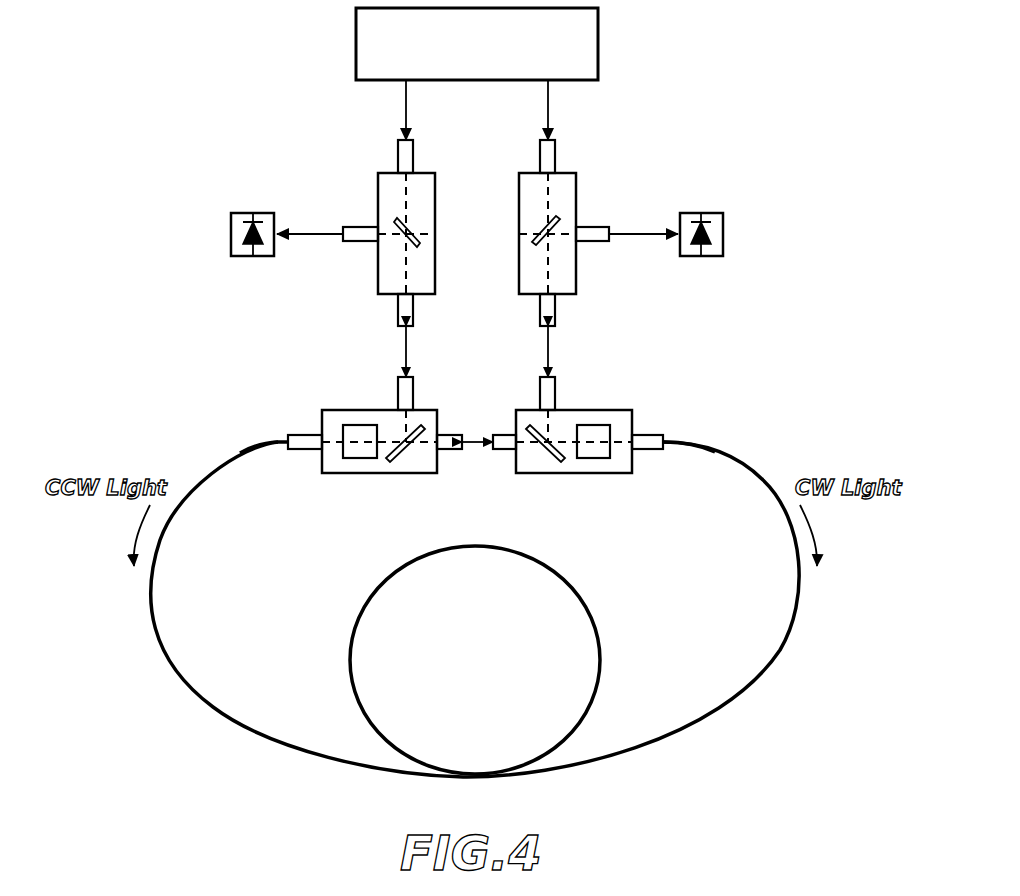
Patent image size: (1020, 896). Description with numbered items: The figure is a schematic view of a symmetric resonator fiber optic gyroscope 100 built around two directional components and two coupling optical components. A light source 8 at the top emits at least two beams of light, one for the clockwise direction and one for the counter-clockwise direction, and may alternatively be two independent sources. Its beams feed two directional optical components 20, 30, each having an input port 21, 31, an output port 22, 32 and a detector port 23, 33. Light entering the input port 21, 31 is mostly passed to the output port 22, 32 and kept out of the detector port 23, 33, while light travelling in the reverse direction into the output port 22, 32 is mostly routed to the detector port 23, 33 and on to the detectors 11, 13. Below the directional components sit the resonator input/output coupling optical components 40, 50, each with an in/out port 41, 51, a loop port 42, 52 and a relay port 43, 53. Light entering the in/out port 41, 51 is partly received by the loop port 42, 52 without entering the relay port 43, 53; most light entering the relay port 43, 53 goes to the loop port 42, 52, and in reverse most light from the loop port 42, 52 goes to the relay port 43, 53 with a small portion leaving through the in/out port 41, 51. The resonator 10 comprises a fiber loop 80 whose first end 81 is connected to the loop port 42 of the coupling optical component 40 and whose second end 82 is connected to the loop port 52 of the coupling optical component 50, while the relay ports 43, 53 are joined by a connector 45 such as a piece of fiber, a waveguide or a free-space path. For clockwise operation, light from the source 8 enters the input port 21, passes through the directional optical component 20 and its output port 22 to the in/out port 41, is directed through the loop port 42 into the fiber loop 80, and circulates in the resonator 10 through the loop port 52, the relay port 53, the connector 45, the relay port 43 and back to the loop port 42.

The light source 8 is at (598, 30).
The resonator fiber optic gyroscope 100 is at (740, 146).
The resonator 10 is at (670, 778).
The detector 11 is at (723, 228).
The detector 13 is at (231, 228).
The directional optical component 20 is at (576, 190).
The input port 21 is at (555, 158).
The output port 22 is at (555, 310).
The detector port 23 is at (592, 227).
The directional optical component 30 is at (378, 190).
The input port 31 is at (398, 158).
The output port 32 is at (398, 310).
The detector port 33 is at (360, 227).
The coupling optical component 40 is at (572, 473).
The in/out port 41 is at (555, 394).
The loop port 42 is at (650, 449).
The relay port 43 is at (506, 449).
The connector 45 is at (472, 438).
The coupling optical component 50 is at (382, 473).
The in/out port 51 is at (398, 394).
The loop port 52 is at (300, 449).
The relay port 53 is at (450, 435).
The fiber loop 80 is at (578, 596).
The first end 81 is at (697, 443).
The second end 82 is at (255, 443).